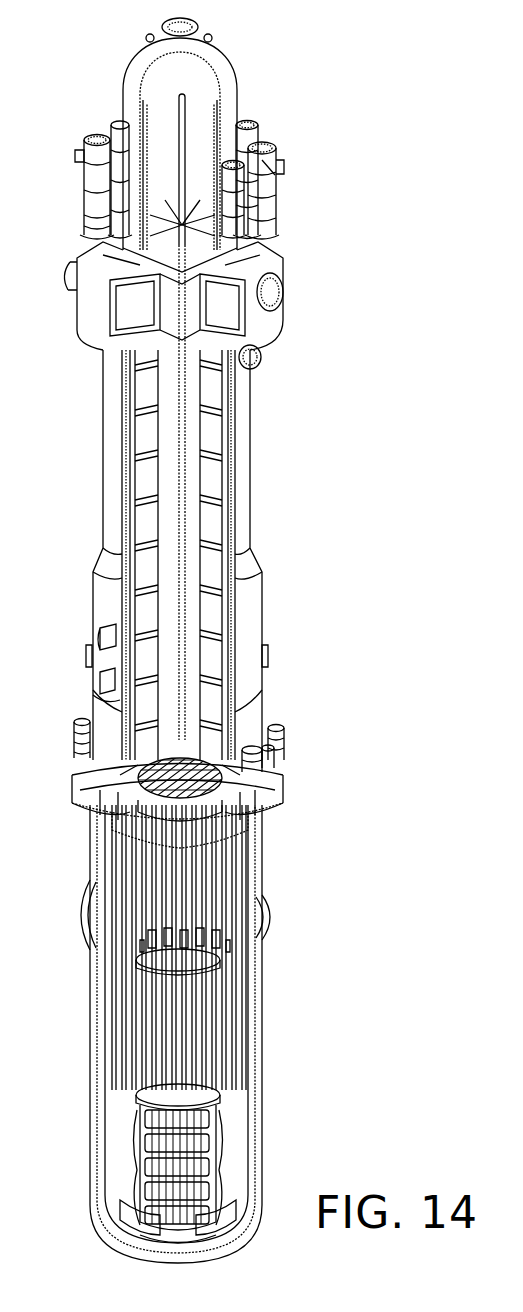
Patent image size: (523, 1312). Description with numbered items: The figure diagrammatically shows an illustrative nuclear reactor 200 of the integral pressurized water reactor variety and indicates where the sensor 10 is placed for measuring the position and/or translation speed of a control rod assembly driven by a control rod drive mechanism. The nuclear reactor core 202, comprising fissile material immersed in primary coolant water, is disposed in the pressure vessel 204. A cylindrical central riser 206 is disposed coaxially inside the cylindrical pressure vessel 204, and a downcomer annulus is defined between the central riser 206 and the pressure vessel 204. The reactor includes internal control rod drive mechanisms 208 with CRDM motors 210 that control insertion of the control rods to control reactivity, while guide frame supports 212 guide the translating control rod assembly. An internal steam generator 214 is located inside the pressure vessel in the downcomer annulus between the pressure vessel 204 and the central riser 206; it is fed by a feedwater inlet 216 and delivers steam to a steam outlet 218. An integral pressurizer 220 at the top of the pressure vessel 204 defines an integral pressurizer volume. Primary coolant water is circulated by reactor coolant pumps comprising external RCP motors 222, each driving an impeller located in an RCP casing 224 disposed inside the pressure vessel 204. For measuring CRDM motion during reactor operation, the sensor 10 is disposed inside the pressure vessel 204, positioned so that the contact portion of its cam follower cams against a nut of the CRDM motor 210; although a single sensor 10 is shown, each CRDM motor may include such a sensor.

The sensor 10 is at (197, 960).
The nuclear reactor 200 is at (302, 583).
The nuclear reactor core 202 is at (177, 1162).
The pressure vessel 204 is at (238, 520).
The central riser 206 is at (185, 402).
The internal control rod drive mechanisms 208 is at (163, 872).
The CRDM motors 210 is at (150, 917).
The guide frame supports 212 is at (157, 1013).
The steam generator 214 is at (140, 435).
The feedwater inlet 216 is at (104, 681).
The steam outlet 218 is at (102, 640).
The integral pressurizer 220 is at (172, 73).
The external RCP motors 222 is at (270, 148).
The RCP casing 224 is at (232, 300).